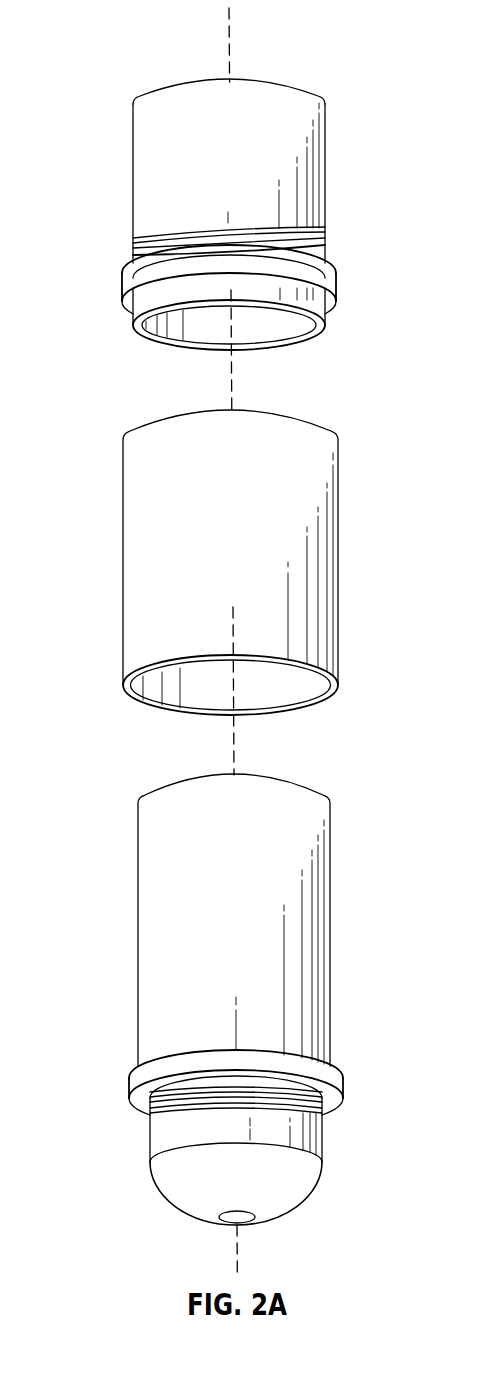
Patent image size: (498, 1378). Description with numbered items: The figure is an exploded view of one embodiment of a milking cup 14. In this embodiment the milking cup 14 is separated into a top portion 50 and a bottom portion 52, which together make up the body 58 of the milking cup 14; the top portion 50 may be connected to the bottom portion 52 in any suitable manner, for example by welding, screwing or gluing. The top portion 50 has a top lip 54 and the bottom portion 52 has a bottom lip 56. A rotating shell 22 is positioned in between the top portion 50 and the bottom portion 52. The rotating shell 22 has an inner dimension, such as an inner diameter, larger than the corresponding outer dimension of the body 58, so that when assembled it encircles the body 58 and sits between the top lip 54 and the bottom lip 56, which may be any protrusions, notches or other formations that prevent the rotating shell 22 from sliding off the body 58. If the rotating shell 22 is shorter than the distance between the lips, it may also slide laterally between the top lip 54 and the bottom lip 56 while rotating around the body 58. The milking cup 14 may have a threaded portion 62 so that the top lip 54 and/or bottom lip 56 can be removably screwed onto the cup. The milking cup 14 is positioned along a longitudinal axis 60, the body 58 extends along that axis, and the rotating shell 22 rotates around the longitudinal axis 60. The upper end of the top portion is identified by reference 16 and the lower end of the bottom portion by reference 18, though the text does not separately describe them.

The milking cup 14 is at (134, 29).
The proximal end of cap 16 is at (192, 82).
The top portion 50 is at (145, 173).
The threaded portion 62 is at (138, 243).
The top lip 54 is at (125, 288).
The body 58 is at (148, 307).
The rotating shell 22 is at (142, 560).
The bottom portion 52 is at (153, 882).
The bottom lip 56 is at (132, 1090).
The nozzle tip 18 is at (288, 1202).
The longitudinal axis 60 is at (237, 1253).